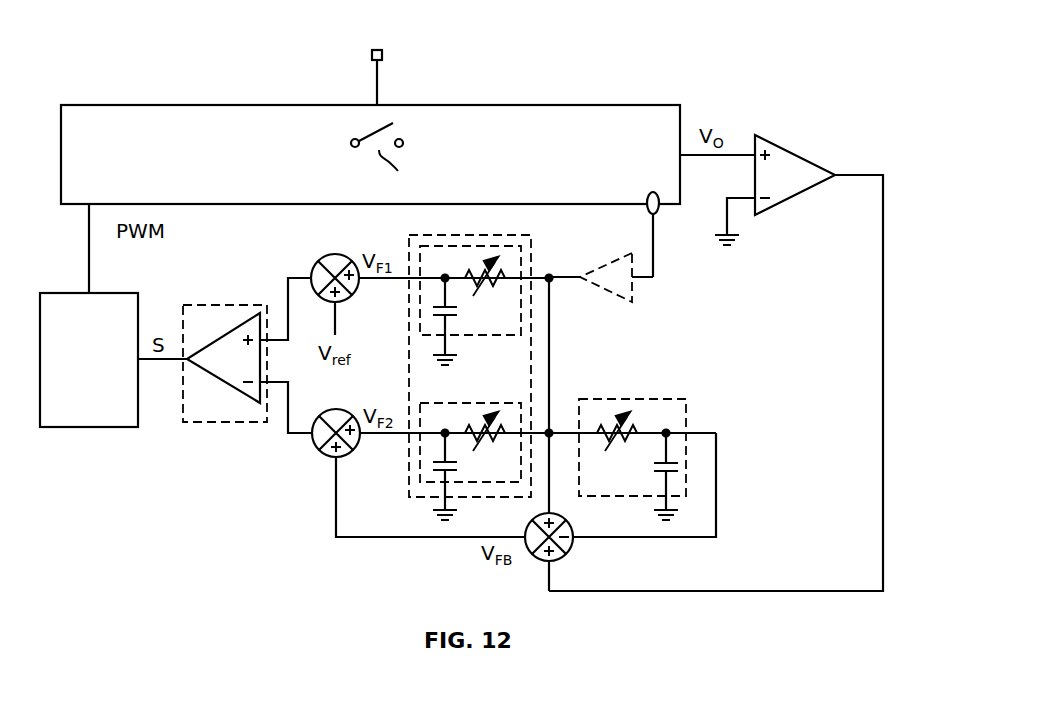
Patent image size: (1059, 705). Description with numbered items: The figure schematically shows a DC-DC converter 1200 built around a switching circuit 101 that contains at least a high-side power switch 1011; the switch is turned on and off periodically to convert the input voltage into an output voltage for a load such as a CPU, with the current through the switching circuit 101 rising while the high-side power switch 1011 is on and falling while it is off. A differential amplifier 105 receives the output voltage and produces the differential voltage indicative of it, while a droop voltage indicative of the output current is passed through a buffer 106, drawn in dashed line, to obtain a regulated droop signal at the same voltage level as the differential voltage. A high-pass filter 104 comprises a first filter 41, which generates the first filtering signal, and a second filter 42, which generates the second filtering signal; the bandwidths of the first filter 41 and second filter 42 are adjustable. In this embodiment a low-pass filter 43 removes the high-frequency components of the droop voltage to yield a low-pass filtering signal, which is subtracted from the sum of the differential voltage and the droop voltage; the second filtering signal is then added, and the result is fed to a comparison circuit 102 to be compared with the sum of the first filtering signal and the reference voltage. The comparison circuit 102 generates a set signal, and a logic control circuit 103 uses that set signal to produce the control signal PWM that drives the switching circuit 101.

The DC-DC converter 1200 is at (818, 70).
The switching circuit 101 is at (370, 114).
The high-side power switch 1011 is at (386, 158).
The comparison circuit 102 is at (247, 355).
The logic control circuit 103 is at (89, 360).
The high-pass filter 104 is at (470, 377).
The differential amplifier 105 is at (716, 363).
The buffer 106 is at (631, 275).
The first filter 41 is at (470, 305).
The second filter 42 is at (470, 461).
The low-pass filter 43 is at (663, 468).